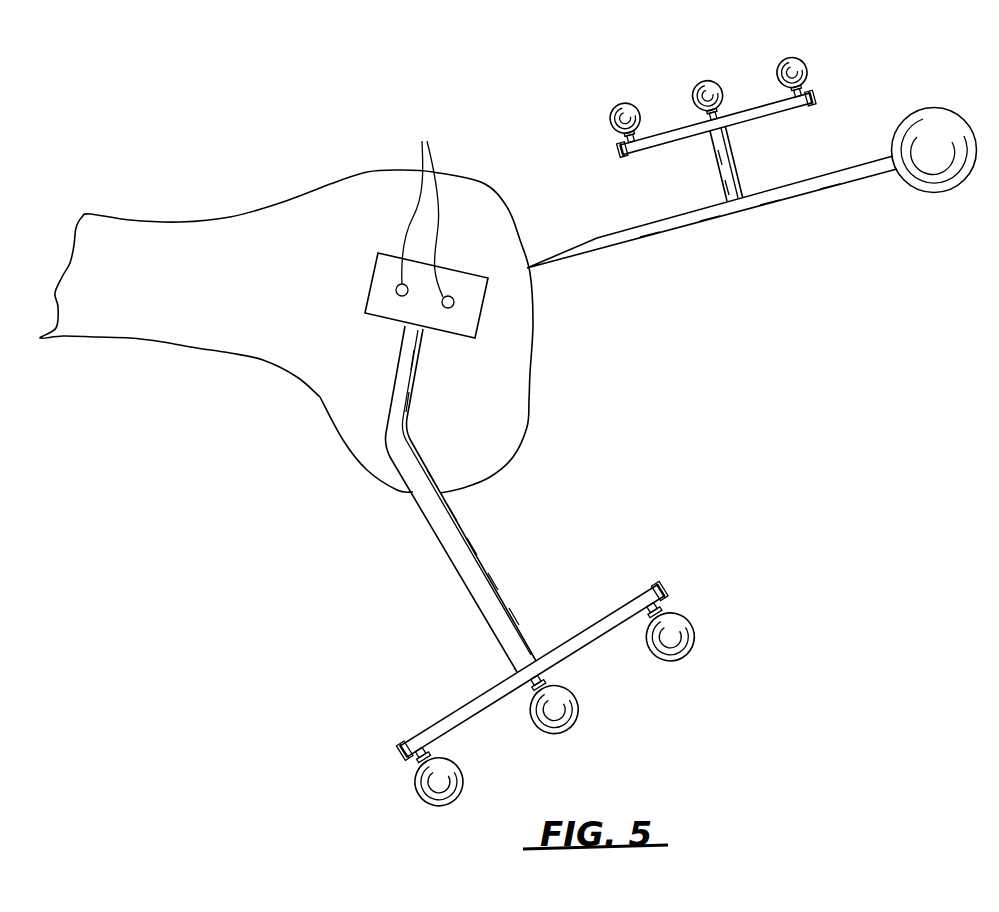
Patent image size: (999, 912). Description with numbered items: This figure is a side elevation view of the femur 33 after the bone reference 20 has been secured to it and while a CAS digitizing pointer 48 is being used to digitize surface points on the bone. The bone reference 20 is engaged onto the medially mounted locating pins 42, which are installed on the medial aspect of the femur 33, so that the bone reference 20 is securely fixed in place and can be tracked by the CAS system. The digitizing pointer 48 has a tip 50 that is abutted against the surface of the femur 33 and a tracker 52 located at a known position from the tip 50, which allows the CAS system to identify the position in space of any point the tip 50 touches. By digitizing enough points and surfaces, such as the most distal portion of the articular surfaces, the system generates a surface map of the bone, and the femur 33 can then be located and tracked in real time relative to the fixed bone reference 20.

The bone reference 20 is at (460, 345).
The femur 33 is at (238, 210).
The locating pins 42 is at (425, 210).
The digitizing pointer 48 is at (847, 115).
The tip 50 is at (527, 266).
The tracker 52 is at (750, 78).